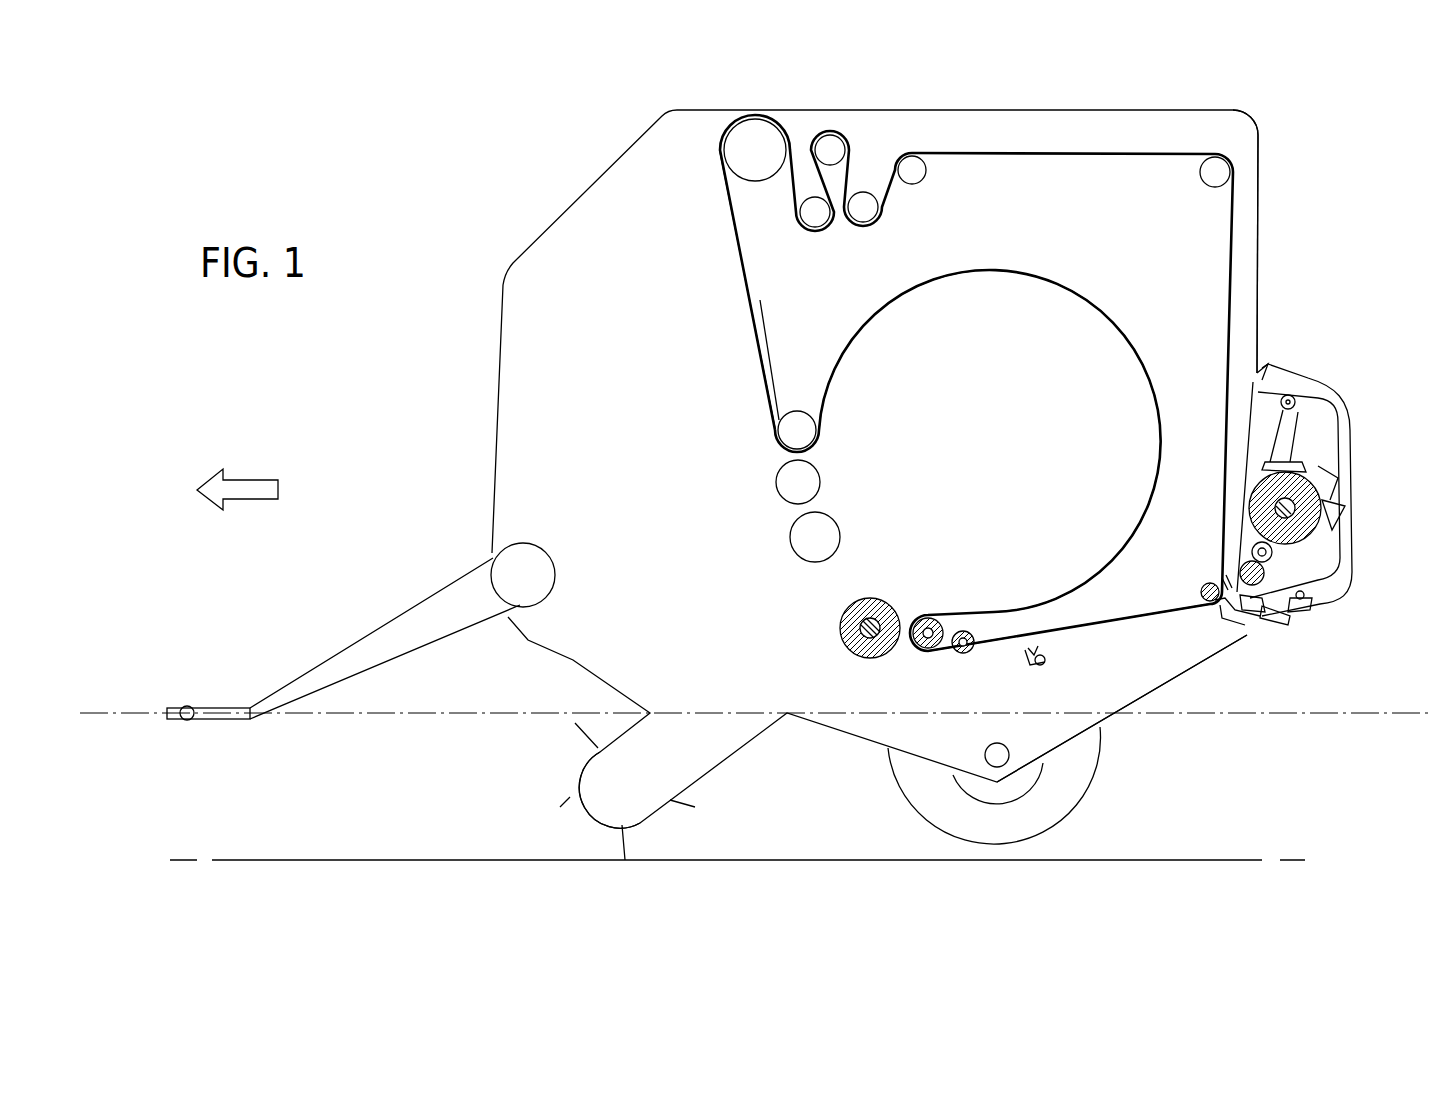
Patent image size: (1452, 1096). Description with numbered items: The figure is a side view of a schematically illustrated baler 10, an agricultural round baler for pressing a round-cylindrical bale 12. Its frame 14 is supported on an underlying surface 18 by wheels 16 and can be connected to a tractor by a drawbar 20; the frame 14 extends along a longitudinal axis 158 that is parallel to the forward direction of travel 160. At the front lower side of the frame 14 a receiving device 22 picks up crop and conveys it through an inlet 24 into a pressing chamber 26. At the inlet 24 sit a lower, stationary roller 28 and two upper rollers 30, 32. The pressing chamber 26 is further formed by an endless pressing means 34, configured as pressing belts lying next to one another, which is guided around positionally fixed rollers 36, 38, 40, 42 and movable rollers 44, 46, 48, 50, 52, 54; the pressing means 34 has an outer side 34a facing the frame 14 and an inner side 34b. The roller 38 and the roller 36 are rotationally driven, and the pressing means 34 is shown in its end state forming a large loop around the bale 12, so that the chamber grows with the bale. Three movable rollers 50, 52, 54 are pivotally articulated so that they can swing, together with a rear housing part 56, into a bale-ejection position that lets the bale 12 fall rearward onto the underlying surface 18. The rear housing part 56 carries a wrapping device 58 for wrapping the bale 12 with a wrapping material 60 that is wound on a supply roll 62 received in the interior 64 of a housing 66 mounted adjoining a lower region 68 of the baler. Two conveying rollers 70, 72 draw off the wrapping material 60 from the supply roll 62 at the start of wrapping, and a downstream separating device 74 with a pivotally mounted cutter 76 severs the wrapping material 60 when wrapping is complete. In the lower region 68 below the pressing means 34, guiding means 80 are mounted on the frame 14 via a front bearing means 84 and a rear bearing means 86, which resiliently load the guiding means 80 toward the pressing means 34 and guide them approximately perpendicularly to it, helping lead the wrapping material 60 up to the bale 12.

The baler 10 is at (314, 122).
The bale 12 is at (979, 450).
The frame 14 is at (464, 393).
The wheels 16 is at (1058, 778).
The underlying surface 18 is at (780, 905).
The drawbar 20 is at (388, 645).
The receiving device 22 is at (597, 783).
The inlet 24 is at (825, 584).
The pressing chamber 26 is at (1130, 300).
The lower stationary roller 28 is at (847, 650).
The upper roller 30 is at (808, 538).
The upper roller 32 is at (792, 478).
The pressing means 34 is at (1001, 138).
The outer side 34a is at (720, 267).
The inner side 34b is at (774, 314).
The positionally fixed roller 36 is at (795, 424).
The positionally fixed roller 38 is at (752, 133).
The positionally fixed roller 40 is at (915, 180).
The positionally fixed roller 42 is at (1200, 178).
The movable roller 44 is at (820, 230).
The movable roller 46 is at (832, 143).
The movable roller 48 is at (873, 215).
The movable roller 50 is at (1205, 582).
The movable roller 52 is at (963, 660).
The movable roller 54 is at (914, 650).
The rear housing part 56 is at (1084, 88).
The wrapping device 58 is at (1318, 515).
The wrapping material 60 is at (1355, 520).
The supply roll 62 is at (1318, 477).
The interior 64 is at (1332, 378).
The housing 66 is at (1352, 553).
The lower region 68 is at (1126, 670).
The conveying roller 70 is at (1300, 605).
The conveying roller 72 is at (1283, 620).
The separating device 74 is at (1230, 629).
The cutter 76 is at (1252, 625).
The guiding means 80 is at (1087, 656).
The front bearing means 84 is at (1030, 624).
The rear bearing means 86 is at (1222, 578).
The longitudinal axis 158 is at (140, 705).
The forward direction of travel 160 is at (254, 490).